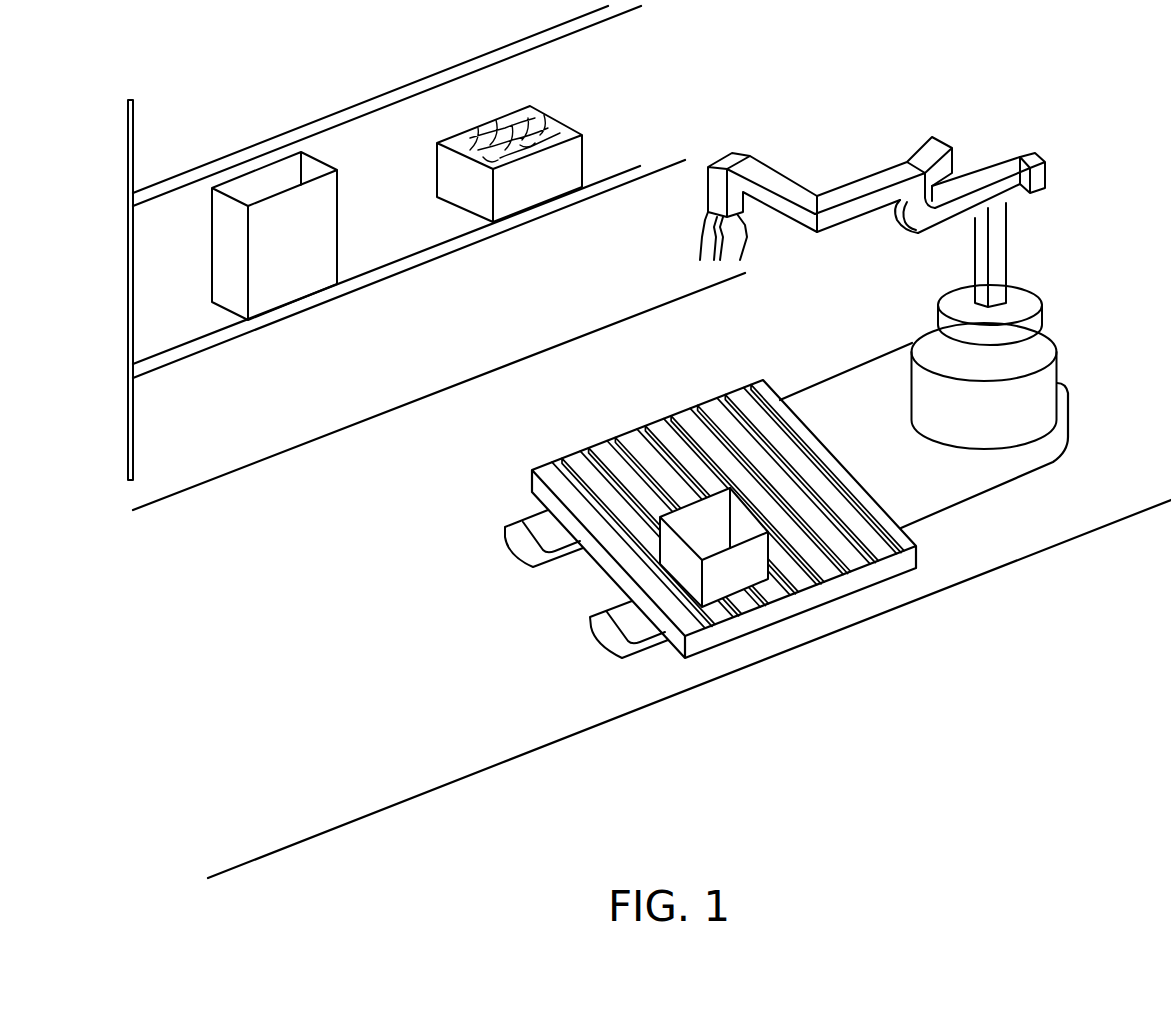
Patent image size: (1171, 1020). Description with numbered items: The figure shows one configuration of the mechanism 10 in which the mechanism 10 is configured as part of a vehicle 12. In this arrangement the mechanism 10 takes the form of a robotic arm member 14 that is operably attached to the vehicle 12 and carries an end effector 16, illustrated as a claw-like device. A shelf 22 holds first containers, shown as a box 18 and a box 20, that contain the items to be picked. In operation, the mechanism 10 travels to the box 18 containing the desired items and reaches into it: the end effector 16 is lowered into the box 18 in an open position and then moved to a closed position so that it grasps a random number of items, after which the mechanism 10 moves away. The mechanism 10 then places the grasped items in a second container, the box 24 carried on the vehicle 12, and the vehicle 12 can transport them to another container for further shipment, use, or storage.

The mechanism 10 is at (813, 261).
The vehicle 12 is at (1057, 342).
The robotic arm member 14 is at (920, 150).
The end effector 16 is at (700, 239).
The box 18 is at (558, 192).
The box 20 is at (314, 257).
The shelf 22 is at (371, 75).
The box 24 is at (753, 585).